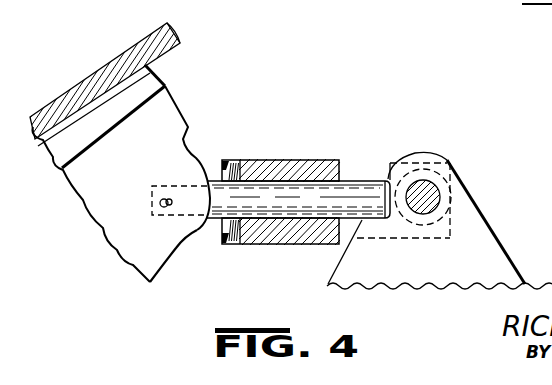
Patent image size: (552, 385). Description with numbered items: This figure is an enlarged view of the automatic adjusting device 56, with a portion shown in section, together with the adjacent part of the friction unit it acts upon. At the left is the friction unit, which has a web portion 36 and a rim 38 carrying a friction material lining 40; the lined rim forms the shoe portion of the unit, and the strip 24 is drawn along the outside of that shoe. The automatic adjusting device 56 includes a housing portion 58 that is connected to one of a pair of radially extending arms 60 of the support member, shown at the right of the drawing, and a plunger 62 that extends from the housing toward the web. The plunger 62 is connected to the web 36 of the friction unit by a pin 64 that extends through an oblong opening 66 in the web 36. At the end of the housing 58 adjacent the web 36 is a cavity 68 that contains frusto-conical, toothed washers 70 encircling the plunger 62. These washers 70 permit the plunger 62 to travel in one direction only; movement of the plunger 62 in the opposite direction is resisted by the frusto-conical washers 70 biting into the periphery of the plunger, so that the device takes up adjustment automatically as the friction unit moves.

The strap 24 is at (114, 71).
The friction material lining 40 is at (145, 78).
The rim 38 is at (112, 127).
The web portion 36 is at (134, 255).
The pin 64 is at (163, 206).
The oblong opening 66 is at (171, 199).
The housing portion 58 is at (277, 170).
The automatic adjusting device 56 is at (334, 156).
The frusto-conical toothed washers 70 is at (258, 162).
The cavity 68 is at (228, 226).
The plunger 62 is at (356, 197).
The radially extending arms 60 is at (470, 238).